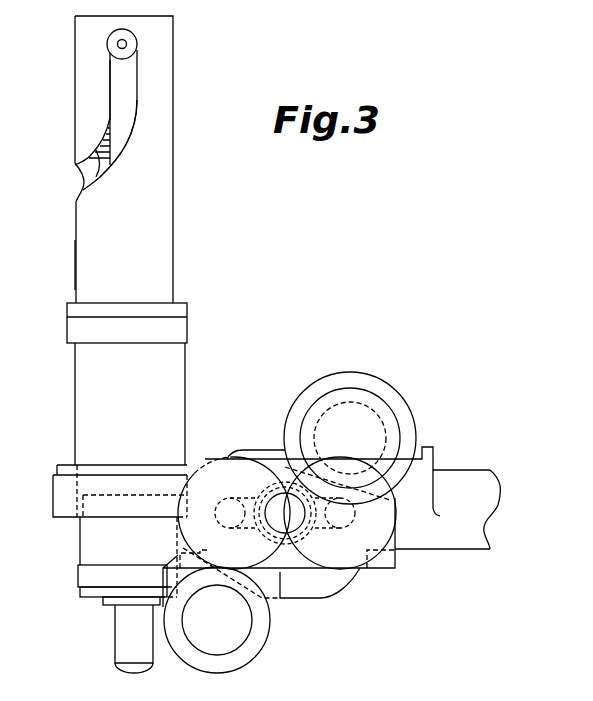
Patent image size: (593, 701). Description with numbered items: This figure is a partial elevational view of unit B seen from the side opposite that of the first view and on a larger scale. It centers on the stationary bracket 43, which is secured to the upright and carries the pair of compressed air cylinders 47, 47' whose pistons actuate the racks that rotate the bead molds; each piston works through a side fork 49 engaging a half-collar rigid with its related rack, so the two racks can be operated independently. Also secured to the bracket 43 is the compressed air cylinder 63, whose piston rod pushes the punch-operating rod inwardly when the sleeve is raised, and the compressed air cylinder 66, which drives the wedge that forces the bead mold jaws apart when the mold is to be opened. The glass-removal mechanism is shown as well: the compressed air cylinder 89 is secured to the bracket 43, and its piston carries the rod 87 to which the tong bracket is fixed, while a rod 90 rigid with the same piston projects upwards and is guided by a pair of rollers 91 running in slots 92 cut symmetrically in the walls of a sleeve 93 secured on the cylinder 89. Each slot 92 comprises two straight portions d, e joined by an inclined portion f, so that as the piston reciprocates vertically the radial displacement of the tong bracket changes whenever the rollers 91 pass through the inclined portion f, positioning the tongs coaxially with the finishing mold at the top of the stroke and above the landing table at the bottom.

The rollers 91 is at (137, 44).
The rod 90 is at (131, 80).
The slots 92 is at (134, 107).
The sleeve 93 is at (127, 179).
The compressed air cylinder 89 is at (120, 474).
The rod 87 is at (134, 639).
The compressed air cylinder 47 is at (234, 497).
The compressed air cylinder 47' is at (354, 513).
The side fork 49 is at (302, 532).
The compressed air cylinder 63 is at (378, 403).
The compressed air cylinder 66 is at (217, 620).
The bracket 43 is at (460, 542).
The straight portion d is at (108, 73).
The straight portion e is at (80, 262).
The inclined portion f is at (82, 166).